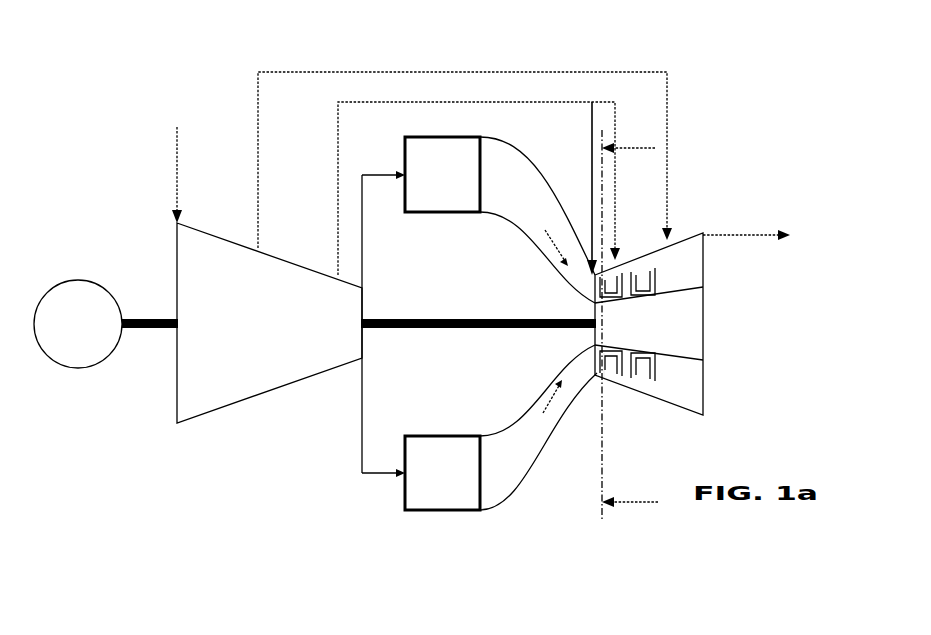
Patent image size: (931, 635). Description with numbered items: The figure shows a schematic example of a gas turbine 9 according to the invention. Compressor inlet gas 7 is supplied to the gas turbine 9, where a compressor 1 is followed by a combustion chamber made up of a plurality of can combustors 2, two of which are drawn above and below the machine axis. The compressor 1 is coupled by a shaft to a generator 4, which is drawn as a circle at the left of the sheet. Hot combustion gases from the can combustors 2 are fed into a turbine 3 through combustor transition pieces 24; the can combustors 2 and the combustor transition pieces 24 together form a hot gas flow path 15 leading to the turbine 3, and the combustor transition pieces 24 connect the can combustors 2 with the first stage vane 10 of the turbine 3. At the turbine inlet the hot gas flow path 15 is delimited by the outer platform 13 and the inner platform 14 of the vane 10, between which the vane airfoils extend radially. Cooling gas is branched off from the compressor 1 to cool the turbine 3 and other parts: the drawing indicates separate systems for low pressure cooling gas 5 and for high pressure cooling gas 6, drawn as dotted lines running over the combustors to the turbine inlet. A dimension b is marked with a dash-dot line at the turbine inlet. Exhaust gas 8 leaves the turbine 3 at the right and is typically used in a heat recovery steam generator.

The compressor 1 is at (270, 336).
The can combustor 2 is at (450, 487).
The turbine 3 is at (659, 333).
The generator 4 is at (86, 336).
The low pressure cooling gas 5 is at (465, 72).
The high pressure cooling gas 6 is at (522, 102).
The compressor inlet gas 7 is at (176, 155).
The exhaust gas 8 is at (758, 236).
The gas turbine 9 is at (328, 437).
The first stage vane 10 is at (602, 375).
The outer platform 13 is at (598, 373).
The inner platform 14 is at (597, 348).
The hot gas flow path 15 is at (553, 413).
The combustor transition piece 24 is at (527, 443).
The axial distance b is at (645, 108).